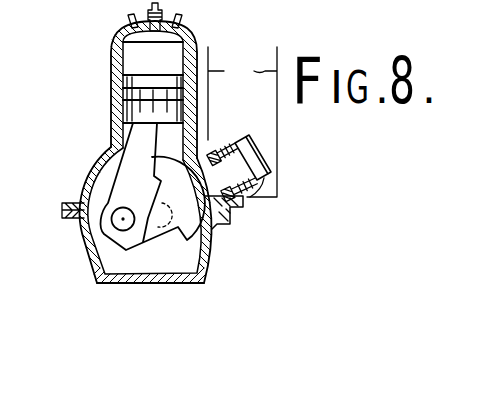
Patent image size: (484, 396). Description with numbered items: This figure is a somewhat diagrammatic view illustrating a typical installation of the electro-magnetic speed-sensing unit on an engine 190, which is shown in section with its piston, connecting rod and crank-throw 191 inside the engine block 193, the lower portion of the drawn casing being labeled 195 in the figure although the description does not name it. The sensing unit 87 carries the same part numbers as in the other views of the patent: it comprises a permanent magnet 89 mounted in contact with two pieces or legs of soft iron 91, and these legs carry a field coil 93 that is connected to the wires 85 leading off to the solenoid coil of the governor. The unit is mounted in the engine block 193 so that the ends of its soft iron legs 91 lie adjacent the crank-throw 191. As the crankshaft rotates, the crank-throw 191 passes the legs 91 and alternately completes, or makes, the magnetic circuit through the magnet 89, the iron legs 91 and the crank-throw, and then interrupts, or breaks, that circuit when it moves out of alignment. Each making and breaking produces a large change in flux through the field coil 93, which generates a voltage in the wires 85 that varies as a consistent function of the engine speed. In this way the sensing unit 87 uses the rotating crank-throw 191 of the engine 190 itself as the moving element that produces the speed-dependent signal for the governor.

The wires 85 is at (242, 122).
The sensing unit 87 is at (242, 155).
The permanent magnet 89 is at (262, 155).
The soft iron legs 91 is at (215, 150).
The field coil 93 is at (269, 180).
The engine 190 is at (99, 124).
The crank-throw 191 is at (222, 228).
The engine block 193 is at (90, 165).
The crankcase bottom wall 195 is at (148, 283).